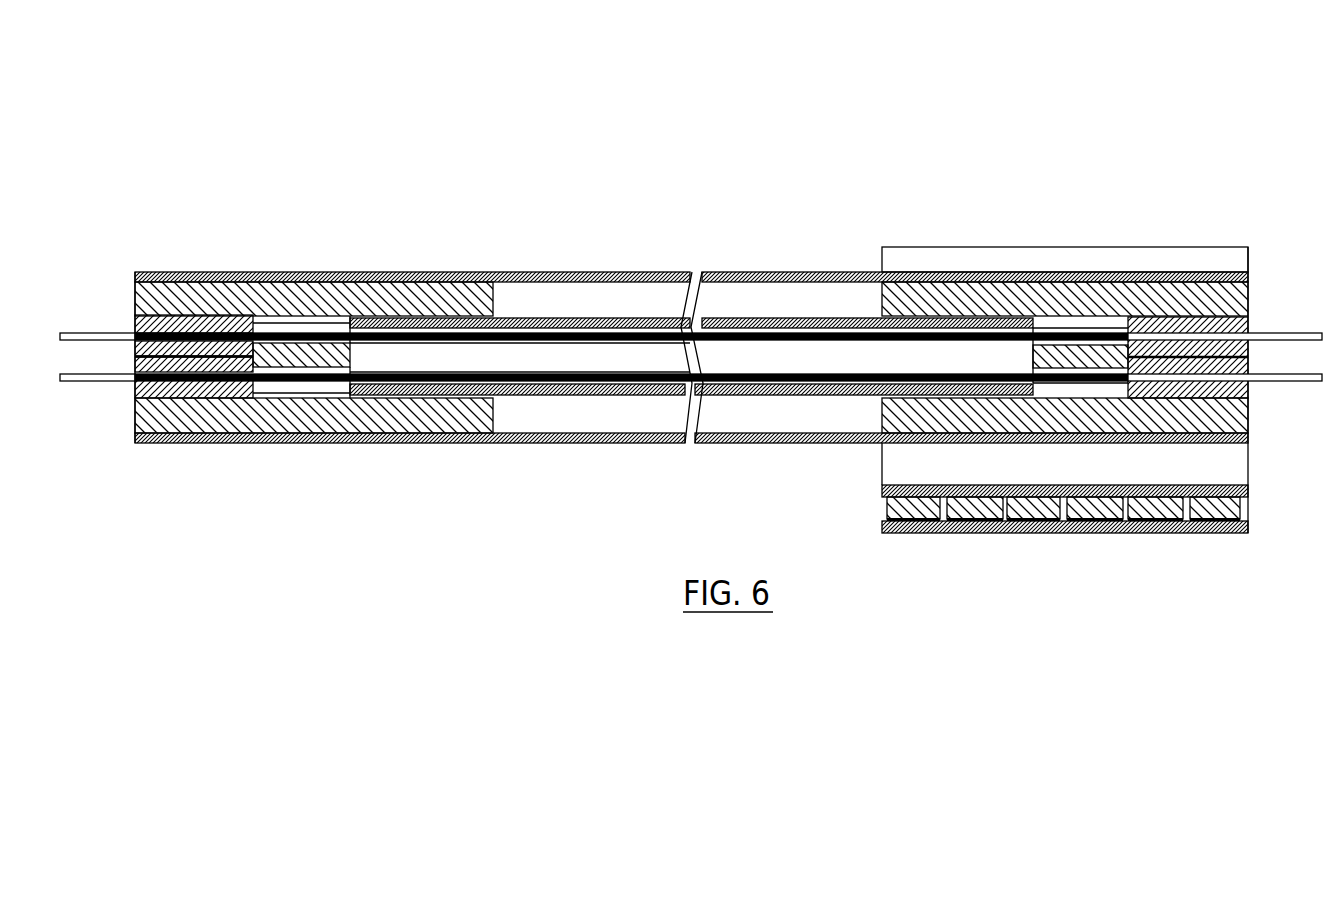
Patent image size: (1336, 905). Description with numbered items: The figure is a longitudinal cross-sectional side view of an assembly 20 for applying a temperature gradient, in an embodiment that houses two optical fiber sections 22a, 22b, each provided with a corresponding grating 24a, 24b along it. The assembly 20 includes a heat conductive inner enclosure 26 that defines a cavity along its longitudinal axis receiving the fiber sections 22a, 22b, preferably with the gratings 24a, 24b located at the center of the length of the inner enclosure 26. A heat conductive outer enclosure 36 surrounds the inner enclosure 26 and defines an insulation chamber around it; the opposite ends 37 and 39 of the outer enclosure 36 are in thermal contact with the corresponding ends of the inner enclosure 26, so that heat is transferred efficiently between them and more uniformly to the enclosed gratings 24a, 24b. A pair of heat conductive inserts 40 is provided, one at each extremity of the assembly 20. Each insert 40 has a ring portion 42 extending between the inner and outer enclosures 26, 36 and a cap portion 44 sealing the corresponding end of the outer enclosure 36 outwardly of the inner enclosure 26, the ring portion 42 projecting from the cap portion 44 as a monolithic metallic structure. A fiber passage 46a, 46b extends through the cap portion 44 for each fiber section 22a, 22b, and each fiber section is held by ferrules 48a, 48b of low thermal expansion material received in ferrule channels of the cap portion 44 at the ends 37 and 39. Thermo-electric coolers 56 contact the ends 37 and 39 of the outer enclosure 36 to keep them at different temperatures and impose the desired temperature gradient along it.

The assembly 20 is at (788, 136).
The optical fiber section 22a is at (83, 332).
The optical fiber section 22b is at (83, 383).
The grating 24a is at (573, 330).
The grating 24b is at (562, 385).
The inner enclosure 26 is at (835, 400).
The outer enclosure 36 is at (820, 272).
The end of the outer enclosure 37 is at (131, 270).
The end of the outer enclosure 39 is at (1266, 304).
The heat conductive insert 40 is at (266, 266).
The ring portion 42 is at (408, 272).
The cap portion 44 is at (245, 398).
The fiber passage 46a is at (305, 330).
The fiber passage 46b is at (307, 388).
The ferrule 48a is at (172, 315).
The ferrule 48b is at (175, 398).
The thermo-electric cooler 56 is at (1068, 247).